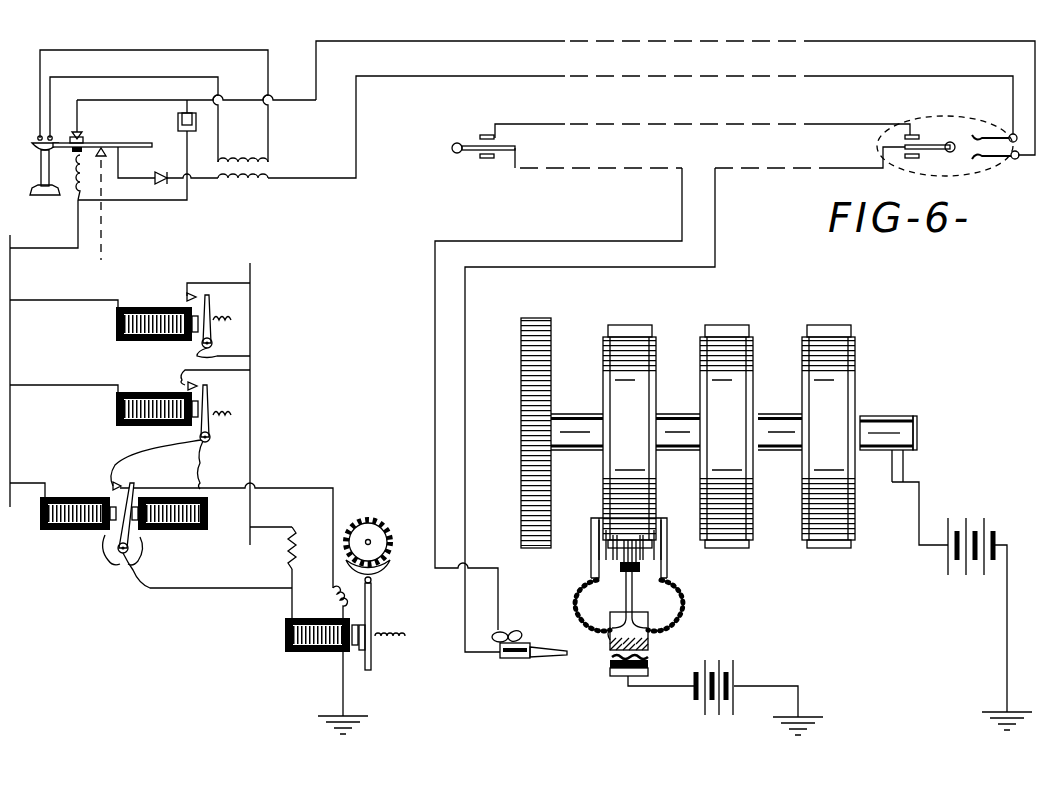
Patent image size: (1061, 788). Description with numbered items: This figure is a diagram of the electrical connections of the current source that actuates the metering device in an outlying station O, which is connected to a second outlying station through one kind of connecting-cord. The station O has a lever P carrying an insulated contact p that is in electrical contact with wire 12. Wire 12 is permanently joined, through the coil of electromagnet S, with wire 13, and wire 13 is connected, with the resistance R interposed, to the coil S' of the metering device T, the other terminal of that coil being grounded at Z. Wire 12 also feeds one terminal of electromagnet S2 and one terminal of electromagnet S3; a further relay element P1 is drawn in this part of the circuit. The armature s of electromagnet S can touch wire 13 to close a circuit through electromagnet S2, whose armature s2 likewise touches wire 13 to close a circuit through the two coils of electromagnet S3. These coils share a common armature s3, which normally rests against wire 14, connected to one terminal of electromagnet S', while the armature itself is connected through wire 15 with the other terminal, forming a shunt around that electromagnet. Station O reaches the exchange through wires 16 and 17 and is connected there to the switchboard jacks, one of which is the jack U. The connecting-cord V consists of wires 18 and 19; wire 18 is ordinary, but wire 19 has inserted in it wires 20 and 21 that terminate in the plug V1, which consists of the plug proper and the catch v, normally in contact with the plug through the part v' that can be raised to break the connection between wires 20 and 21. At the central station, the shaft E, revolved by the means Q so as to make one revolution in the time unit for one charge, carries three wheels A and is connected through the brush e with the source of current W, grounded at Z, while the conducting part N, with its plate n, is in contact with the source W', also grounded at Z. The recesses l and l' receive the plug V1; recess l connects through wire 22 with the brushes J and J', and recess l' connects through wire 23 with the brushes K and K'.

The outlying station O is at (33, 153).
The lever P is at (117, 138).
The contact p is at (86, 140).
The relay P1 is at (197, 121).
The wire 12 is at (78, 222).
The wire 13 is at (252, 384).
The wire 14 is at (273, 490).
The wire 15 is at (209, 585).
The wire 16 is at (538, 33).
The wire 17 is at (538, 68).
The wire 18 is at (731, 118).
The wire 19 is at (754, 162).
The wire 20 is at (555, 244).
The wire 21 is at (595, 270).
The wire 22 is at (580, 594).
The wire 23 is at (683, 599).
The electromagnet S is at (157, 306).
The armature s is at (218, 320).
The electromagnet S2 is at (152, 392).
The armature s2 is at (180, 430).
The electromagnet S3 is at (74, 530).
The armature s3 is at (126, 537).
The coil of the metering device S' is at (321, 649).
The resistance R is at (288, 546).
The metering device T is at (375, 595).
The ground Z is at (345, 730).
The connecting-cord V is at (703, 151).
The jack U is at (996, 152).
The revolving means Q is at (530, 405).
The wheel A is at (638, 335).
The shaft E is at (893, 418).
The brush e is at (902, 465).
The source of current W is at (970, 533).
The source of current W' is at (718, 672).
The brush J' is at (582, 541).
The brush K' is at (675, 542).
The brush J is at (609, 569).
The brush K is at (646, 569).
The conducting part N is at (617, 678).
The contact plate n is at (650, 666).
The recess l is at (594, 665).
The recess l' is at (642, 655).
The plug V1 is at (518, 660).
The catch v is at (505, 629).
The part v' is at (526, 638).